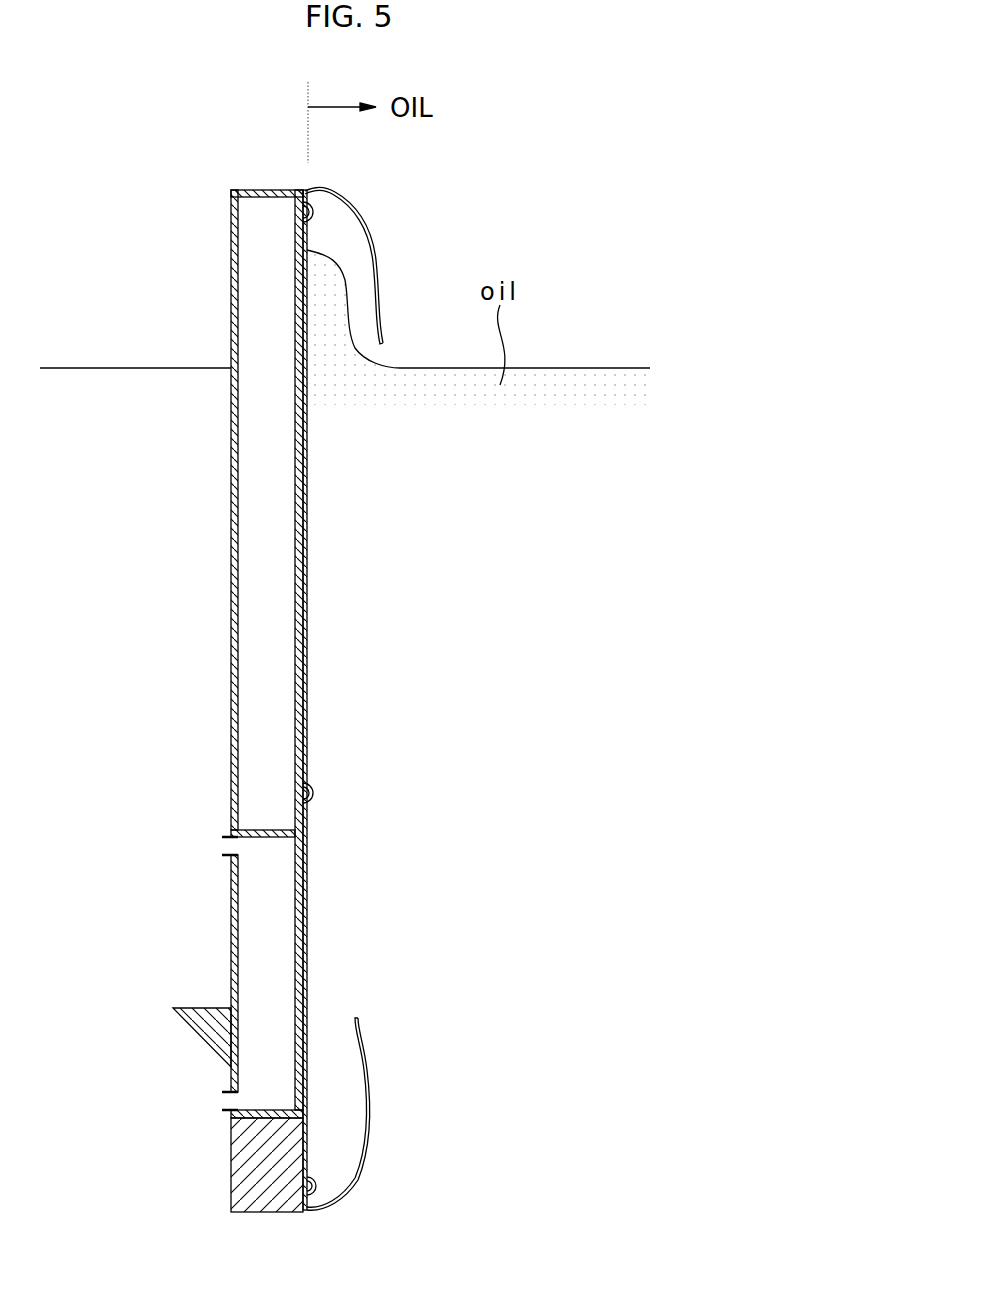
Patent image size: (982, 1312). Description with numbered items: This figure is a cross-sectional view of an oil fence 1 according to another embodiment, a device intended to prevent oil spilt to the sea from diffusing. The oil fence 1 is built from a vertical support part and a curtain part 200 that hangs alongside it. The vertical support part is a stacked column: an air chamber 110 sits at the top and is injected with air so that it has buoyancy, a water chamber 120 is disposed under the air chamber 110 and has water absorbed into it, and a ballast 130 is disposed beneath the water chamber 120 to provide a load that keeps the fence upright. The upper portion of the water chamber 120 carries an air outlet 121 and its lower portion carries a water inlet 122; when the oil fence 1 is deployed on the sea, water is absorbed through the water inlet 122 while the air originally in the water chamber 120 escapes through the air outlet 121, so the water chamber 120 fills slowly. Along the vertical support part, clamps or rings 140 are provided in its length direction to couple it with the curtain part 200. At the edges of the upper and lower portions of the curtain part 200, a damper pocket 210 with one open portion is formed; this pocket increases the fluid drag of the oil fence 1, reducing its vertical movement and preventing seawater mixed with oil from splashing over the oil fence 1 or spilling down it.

The oil fence 1 is at (564, 242).
The air chamber 110 is at (258, 448).
The water chamber 120 is at (259, 1012).
The air outlet 121 is at (230, 848).
The water inlet 122 is at (225, 1104).
The ballast 130 is at (261, 1131).
The clamps or rings 140 is at (315, 795).
The curtain part 200 is at (307, 888).
The damper pocket 210 is at (358, 224).